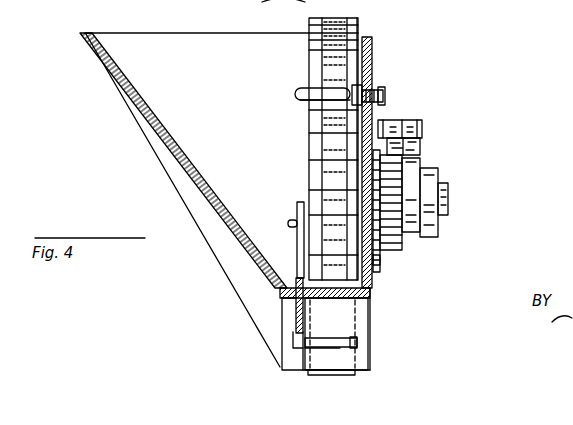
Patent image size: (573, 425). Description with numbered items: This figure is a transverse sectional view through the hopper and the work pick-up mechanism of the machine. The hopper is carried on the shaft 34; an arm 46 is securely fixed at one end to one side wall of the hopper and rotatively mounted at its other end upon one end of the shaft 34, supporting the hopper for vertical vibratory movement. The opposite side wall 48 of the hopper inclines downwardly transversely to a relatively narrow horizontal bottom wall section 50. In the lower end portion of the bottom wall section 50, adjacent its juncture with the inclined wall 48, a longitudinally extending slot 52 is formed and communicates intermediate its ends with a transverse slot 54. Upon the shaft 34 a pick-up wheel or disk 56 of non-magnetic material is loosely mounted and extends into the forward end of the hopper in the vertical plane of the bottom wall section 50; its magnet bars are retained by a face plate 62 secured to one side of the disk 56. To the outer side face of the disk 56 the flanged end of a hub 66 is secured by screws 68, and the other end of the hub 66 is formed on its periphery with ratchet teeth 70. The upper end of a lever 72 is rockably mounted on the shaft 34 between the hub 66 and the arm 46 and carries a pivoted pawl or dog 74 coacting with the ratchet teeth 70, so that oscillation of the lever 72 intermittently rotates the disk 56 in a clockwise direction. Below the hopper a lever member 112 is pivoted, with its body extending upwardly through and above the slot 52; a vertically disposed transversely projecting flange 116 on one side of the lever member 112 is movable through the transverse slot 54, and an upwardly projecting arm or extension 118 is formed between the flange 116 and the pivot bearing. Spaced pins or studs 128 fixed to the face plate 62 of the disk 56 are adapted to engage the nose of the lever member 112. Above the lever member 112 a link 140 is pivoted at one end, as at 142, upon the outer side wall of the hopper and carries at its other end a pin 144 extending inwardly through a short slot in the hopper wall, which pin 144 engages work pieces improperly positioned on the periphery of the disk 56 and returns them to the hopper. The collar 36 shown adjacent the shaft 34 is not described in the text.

The shaft 34 is at (450, 196).
The collar 36 is at (440, 235).
The arm 46 is at (420, 142).
The inclined side wall 48 is at (124, 84).
The bottom wall section 50 is at (345, 315).
The longitudinal slot 52 is at (297, 322).
The transverse slot 54 is at (357, 345).
The pick-up wheel or disk 56 is at (364, 26).
The face plate 62 is at (309, 24).
The hub 66 is at (393, 243).
The screws 68 is at (379, 263).
The ratchet teeth 70 is at (405, 240).
The lever 72 is at (420, 150).
The pawl or dog 74 is at (396, 120).
The lever member 112 is at (292, 282).
The flange 116 is at (337, 342).
The arm or extension 118 is at (300, 240).
The pins or studs 128 is at (291, 222).
The link 140 is at (383, 90).
The pivot of link 142 is at (350, 101).
The pin 144 is at (297, 92).